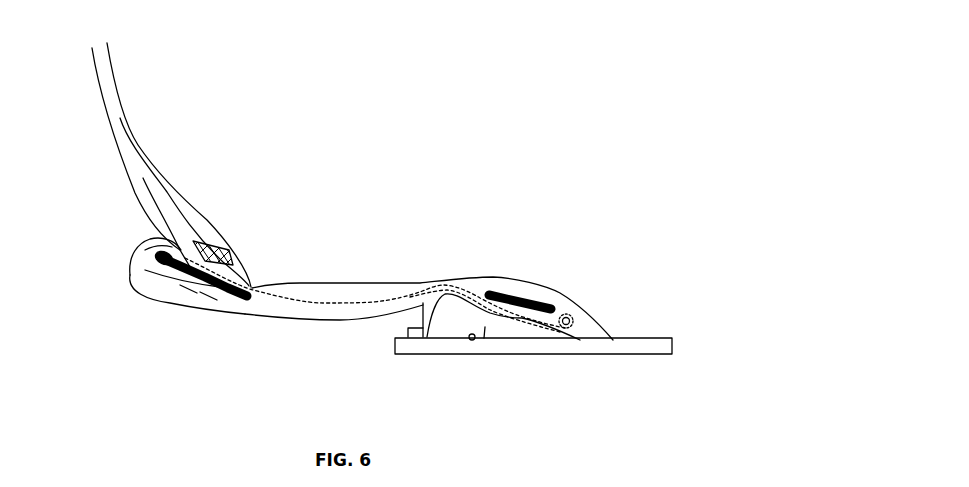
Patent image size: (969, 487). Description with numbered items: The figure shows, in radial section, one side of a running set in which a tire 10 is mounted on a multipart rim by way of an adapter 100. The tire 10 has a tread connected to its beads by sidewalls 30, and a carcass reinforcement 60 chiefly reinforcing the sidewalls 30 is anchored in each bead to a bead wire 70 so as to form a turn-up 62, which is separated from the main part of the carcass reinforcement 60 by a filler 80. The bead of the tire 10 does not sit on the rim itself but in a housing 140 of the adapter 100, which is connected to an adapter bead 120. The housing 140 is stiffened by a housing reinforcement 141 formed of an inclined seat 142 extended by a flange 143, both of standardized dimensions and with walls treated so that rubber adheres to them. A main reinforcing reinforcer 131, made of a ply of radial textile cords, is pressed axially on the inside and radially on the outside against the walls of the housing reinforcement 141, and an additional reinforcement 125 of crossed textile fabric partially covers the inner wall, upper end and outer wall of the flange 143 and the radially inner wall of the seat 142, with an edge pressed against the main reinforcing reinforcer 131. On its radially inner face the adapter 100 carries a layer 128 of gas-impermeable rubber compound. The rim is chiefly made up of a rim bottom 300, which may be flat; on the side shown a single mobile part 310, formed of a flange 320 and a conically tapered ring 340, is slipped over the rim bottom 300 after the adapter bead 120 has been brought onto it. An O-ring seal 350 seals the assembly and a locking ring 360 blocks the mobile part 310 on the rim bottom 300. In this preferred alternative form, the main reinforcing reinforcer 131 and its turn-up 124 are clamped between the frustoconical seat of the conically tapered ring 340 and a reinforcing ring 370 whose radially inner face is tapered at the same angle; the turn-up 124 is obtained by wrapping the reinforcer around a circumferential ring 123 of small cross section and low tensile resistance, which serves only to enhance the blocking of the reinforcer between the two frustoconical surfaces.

The tire 10 is at (158, 91).
The sidewall 30 is at (98, 69).
The carcass reinforcement 60 is at (152, 167).
The turn-up 62 is at (160, 212).
The bead wire 70 is at (242, 255).
The filler 80 is at (190, 224).
The adapter 100 is at (393, 208).
The adapter bead 120 is at (543, 290).
The circumferential ring 123 is at (572, 328).
The turn-up 124 is at (422, 350).
The additional reinforcement 125 is at (135, 271).
The layer of gas-impermeable rubber compound 128 is at (323, 288).
The main reinforcing reinforcer 131 is at (277, 297).
The housing 140 is at (188, 293).
The housing reinforcement 141 is at (152, 290).
The seat 142 is at (223, 293).
The flange 143 is at (157, 253).
The rim bottom 300 is at (645, 350).
The single mobile part 310 is at (485, 338).
The flange 320 is at (443, 300).
The conically tapered ring 340 is at (520, 327).
The O-ring seal 350 is at (470, 339).
The locking ring 360 is at (413, 328).
The reinforcing ring 370 is at (520, 292).